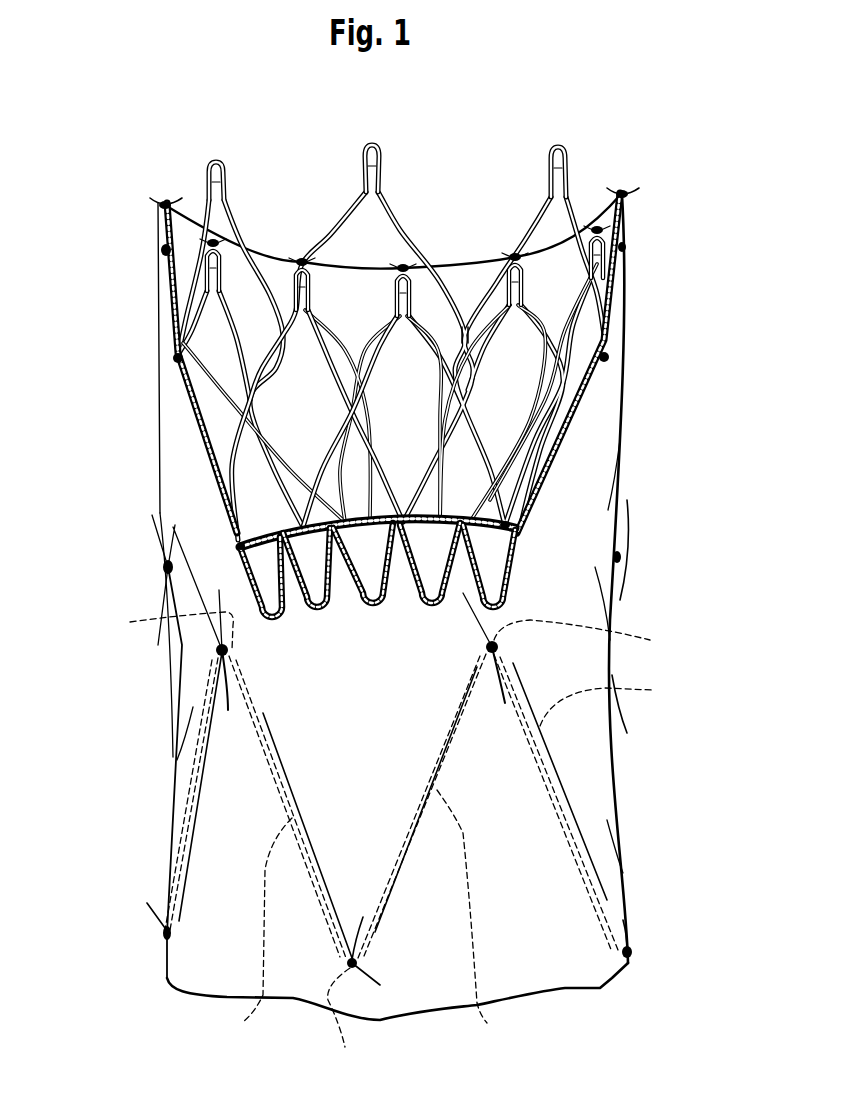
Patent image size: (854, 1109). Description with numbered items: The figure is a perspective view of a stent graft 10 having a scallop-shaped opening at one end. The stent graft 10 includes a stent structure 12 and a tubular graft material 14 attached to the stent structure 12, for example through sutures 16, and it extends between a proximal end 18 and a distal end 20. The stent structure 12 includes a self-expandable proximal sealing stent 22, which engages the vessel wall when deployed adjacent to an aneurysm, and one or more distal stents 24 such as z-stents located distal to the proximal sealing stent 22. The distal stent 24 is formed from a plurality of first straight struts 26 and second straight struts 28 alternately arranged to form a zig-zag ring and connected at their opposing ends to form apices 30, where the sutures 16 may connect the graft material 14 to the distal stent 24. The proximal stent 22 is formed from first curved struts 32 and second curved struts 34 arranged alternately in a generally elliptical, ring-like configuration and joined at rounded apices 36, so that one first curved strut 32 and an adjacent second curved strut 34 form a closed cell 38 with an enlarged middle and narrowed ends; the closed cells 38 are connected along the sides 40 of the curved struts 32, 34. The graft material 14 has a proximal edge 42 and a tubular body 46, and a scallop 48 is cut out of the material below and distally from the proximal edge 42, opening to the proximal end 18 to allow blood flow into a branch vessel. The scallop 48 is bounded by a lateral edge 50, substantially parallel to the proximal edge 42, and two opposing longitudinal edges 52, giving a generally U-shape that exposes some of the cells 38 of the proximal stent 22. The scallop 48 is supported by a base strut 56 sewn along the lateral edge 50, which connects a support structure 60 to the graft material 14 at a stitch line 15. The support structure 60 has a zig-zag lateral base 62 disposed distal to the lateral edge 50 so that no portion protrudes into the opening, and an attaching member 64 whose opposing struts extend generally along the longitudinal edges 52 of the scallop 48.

The stent graft 10 is at (690, 142).
The stent structure 12 is at (404, 188).
The tubular graft material 14 is at (600, 777).
The stitch line 15 is at (237, 547).
The sutures 16 is at (217, 647).
The proximal end 18 is at (150, 210).
The distal end 20 is at (148, 978).
The proximal sealing stent 22 is at (577, 180).
The distal stent 24 is at (602, 872).
The first straight struts 26 is at (450, 861).
The second straight struts 28 is at (190, 823).
The apices 30 is at (392, 839).
The first curved struts 32 is at (160, 236).
The second curved struts 34 is at (211, 247).
The apices 36 is at (370, 140).
The closed cell 38 is at (340, 284).
The sides 40 is at (470, 334).
The proximal edge 42 is at (267, 250).
The tubular body 46 is at (507, 803).
The scallop 48 is at (343, 500).
The lateral edge 50 is at (520, 530).
The longitudinal edges 52 is at (578, 404).
The base strut 56 is at (505, 527).
The support structure 60 is at (218, 522).
The lateral base 62 is at (247, 595).
The attaching member 64 is at (157, 258).